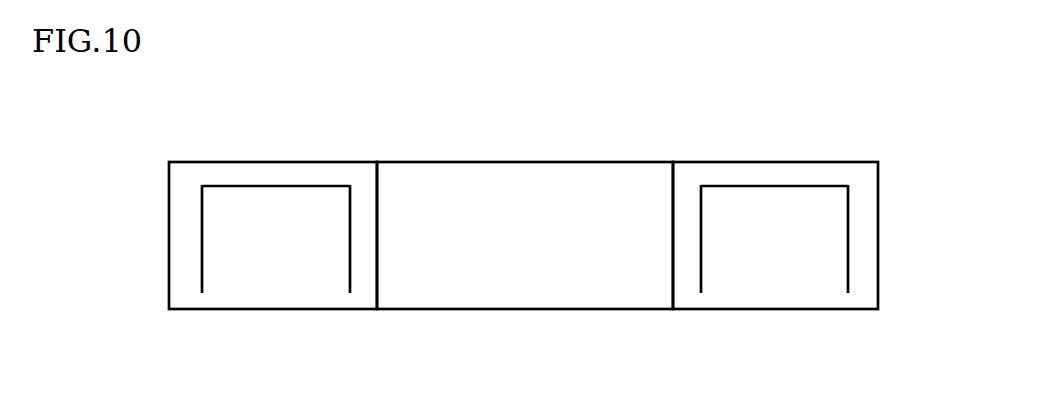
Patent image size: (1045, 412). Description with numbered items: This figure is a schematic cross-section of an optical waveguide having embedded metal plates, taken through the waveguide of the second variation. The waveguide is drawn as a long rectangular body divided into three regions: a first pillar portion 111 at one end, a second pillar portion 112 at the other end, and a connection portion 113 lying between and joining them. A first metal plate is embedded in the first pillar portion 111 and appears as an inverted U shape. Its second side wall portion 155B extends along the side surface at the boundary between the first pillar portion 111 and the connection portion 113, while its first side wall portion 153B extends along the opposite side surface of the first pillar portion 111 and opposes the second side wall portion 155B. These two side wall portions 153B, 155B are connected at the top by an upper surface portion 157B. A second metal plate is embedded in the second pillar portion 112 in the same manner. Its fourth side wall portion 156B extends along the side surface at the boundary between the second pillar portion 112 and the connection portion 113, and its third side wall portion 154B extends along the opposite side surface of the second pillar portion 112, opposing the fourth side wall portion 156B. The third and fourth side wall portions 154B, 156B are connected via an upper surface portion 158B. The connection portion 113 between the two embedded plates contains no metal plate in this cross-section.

The first pillar portion 111 is at (772, 288).
The second pillar portion 112 is at (265, 288).
The connection portion 113 is at (537, 288).
The first side wall portion 153B is at (848, 229).
The third side wall portion 154B is at (205, 236).
The second side wall portion 155B is at (700, 215).
The fourth side wall portion 156B is at (351, 228).
The upper surface portion 157B is at (763, 186).
The upper surface portion 158B is at (246, 186).